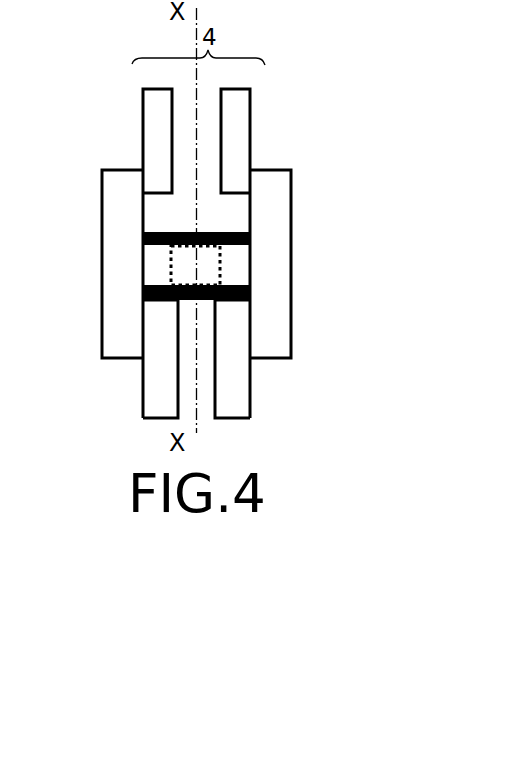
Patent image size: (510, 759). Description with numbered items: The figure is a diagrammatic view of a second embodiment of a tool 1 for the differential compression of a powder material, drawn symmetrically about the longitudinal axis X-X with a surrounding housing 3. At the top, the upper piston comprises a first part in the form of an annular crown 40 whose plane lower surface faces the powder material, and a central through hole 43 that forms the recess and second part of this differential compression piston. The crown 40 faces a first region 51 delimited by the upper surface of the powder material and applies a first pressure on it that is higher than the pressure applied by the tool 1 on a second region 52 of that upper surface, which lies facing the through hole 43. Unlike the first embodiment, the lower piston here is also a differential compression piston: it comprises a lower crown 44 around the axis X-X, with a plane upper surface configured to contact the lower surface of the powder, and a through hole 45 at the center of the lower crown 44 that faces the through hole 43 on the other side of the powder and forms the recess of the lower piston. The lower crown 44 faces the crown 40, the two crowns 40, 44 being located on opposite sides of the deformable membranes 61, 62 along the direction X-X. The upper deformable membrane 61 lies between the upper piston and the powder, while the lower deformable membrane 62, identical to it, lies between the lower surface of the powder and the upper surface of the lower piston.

The tool 1 is at (343, 128).
The housing 3 is at (116, 222).
The crown 40 is at (155, 115).
The through hole 43 is at (205, 139).
The lower crown 44 is at (162, 385).
The through hole 45 is at (205, 376).
The first region 51 is at (238, 268).
The second region 52 is at (182, 271).
The upper deformable membrane 61 is at (248, 237).
The lower deformable membrane 62 is at (249, 293).